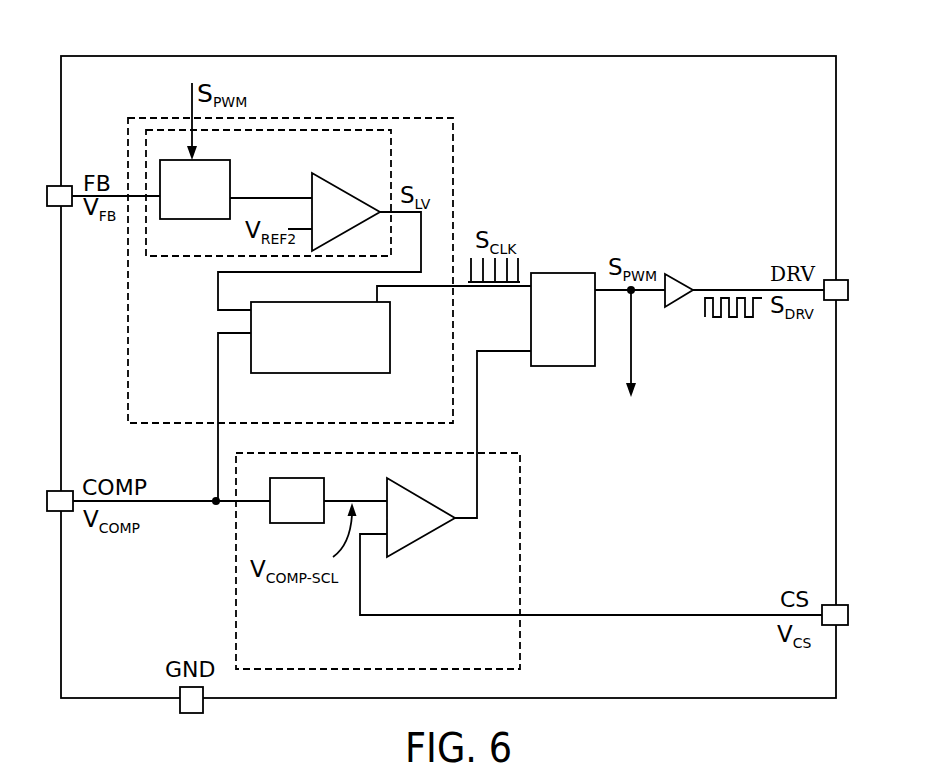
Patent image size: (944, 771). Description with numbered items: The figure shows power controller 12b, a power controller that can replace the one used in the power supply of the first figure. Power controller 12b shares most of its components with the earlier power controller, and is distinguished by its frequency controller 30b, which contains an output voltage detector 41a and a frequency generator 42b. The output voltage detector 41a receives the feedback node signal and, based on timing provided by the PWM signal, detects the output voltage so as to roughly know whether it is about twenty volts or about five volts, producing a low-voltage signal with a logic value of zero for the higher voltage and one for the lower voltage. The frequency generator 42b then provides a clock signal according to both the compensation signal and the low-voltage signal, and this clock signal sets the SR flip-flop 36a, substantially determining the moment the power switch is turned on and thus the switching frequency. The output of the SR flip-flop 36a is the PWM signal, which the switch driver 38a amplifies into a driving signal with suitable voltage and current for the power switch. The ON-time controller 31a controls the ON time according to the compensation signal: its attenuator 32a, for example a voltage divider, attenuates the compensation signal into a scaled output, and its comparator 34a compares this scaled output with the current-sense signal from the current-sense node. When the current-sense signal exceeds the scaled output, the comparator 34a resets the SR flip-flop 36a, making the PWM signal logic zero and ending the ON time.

The power controller 12b is at (145, 56).
The frequency controller 30b is at (425, 118).
The output voltage detector 41a is at (374, 160).
The frequency generator 42b is at (293, 361).
The SR flip-flop 36a is at (585, 328).
The switch driver 38a is at (672, 277).
The ON-time controller 31a is at (300, 660).
The attenuator 32a is at (278, 512).
The comparator 34a is at (418, 538).